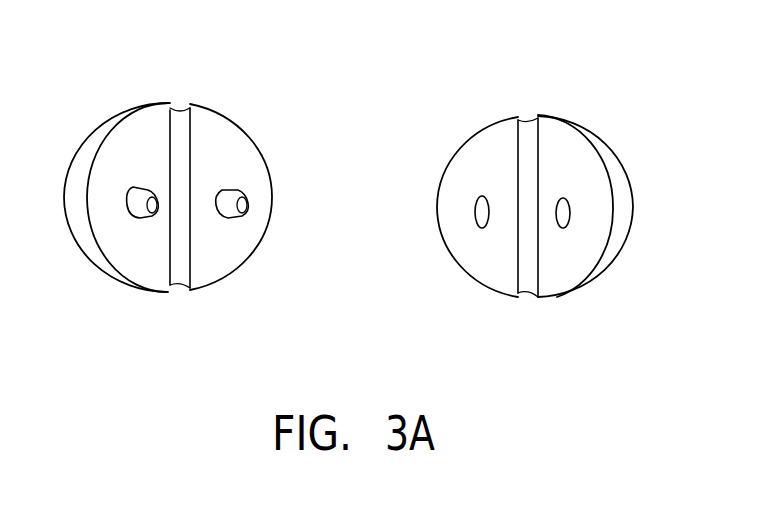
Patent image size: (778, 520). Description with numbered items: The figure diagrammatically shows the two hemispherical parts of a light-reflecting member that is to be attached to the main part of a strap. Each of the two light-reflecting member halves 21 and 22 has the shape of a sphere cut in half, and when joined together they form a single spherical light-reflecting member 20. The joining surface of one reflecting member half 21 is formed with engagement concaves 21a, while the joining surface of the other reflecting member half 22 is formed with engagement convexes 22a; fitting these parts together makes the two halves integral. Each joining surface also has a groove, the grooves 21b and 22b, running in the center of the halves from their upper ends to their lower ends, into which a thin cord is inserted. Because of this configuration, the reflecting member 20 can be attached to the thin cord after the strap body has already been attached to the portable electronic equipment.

The spherical light-reflecting member 20 is at (560, 73).
The light-reflecting member half 21 is at (607, 142).
The engagement concaves 21a is at (478, 217).
The groove 21b is at (527, 273).
The light-reflecting member half 22 is at (120, 117).
The engagement convexes 22a is at (147, 208).
The groove 22b is at (178, 258).